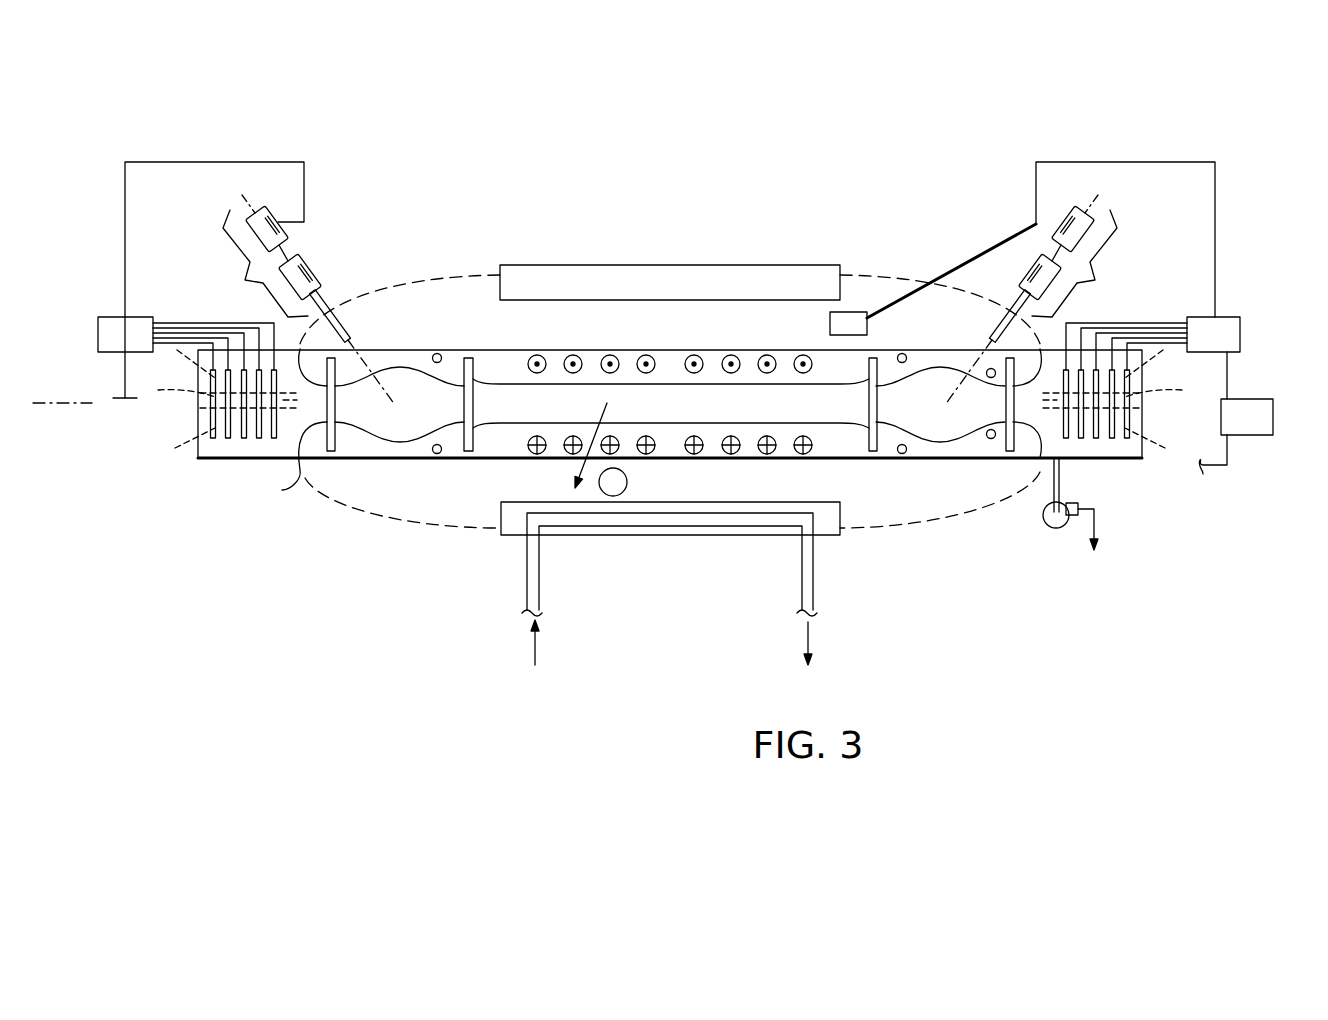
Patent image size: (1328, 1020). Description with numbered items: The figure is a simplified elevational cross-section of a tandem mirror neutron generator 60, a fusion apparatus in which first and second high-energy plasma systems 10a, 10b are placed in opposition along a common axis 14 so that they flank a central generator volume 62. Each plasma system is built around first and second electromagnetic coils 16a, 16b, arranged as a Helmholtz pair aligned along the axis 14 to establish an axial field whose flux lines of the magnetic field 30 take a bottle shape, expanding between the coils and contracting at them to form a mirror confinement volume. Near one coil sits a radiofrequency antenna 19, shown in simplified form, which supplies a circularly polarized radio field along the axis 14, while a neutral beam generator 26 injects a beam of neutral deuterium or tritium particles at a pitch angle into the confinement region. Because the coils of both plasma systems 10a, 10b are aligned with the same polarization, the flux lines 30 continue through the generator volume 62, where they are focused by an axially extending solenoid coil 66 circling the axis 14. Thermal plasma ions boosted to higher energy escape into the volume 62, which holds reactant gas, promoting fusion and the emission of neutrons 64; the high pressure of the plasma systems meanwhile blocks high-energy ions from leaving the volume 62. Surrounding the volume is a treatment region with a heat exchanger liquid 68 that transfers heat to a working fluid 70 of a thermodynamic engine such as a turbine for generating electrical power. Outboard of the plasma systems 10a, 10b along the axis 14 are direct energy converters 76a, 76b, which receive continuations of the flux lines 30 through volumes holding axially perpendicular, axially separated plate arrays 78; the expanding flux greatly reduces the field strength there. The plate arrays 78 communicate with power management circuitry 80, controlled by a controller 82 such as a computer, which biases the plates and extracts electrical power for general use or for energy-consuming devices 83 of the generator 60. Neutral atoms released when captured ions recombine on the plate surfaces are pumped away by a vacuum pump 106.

The first high-energy plasma system 10a is at (397, 412).
The second high-energy plasma system 10b is at (941, 414).
The axis 14 is at (62, 408).
The first electromagnetic coil 16a is at (876, 455).
The second electromagnetic coil 16b is at (473, 432).
The radiofrequency antenna 19 is at (437, 455).
The neutral beam generator 26 is at (669, 300).
The flux lines of the magnetic field 30 is at (395, 442).
The tandem mirror neutron generator 60 is at (670, 330).
The generator volume 62 is at (659, 416).
The neutrons 64 is at (628, 481).
The solenoid coil 66 is at (534, 436).
The heat exchanger liquid 68 is at (702, 263).
The working fluid 70 is at (805, 558).
The first direct energy converter 76a is at (201, 426).
The second direct energy converter 76b is at (1131, 425).
The plate arrays 78 is at (213, 405).
The power management circuitry 80 is at (98, 336).
The controller 82 is at (1252, 399).
The energy-consuming devices 83 is at (830, 322).
The vacuum pump 106 is at (1056, 528).